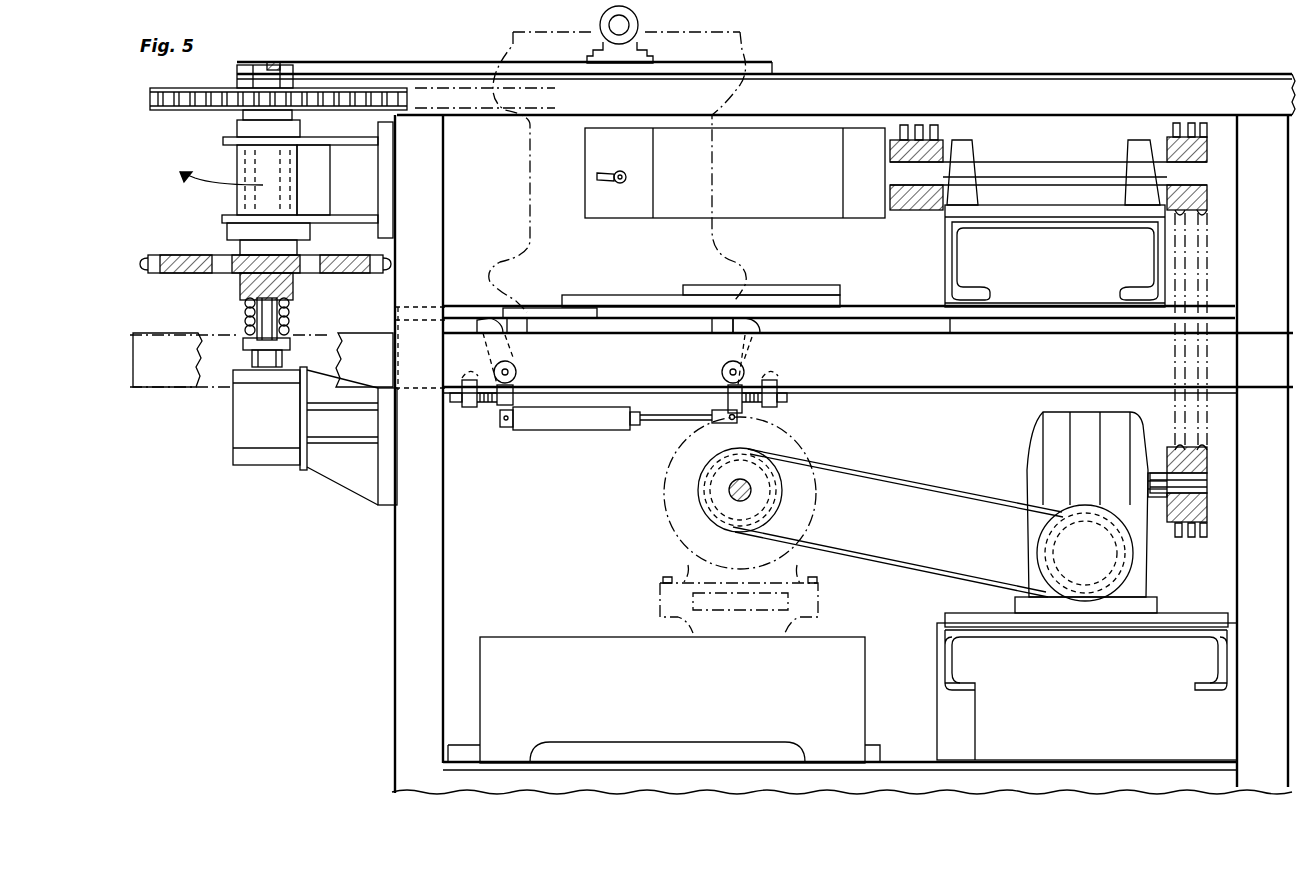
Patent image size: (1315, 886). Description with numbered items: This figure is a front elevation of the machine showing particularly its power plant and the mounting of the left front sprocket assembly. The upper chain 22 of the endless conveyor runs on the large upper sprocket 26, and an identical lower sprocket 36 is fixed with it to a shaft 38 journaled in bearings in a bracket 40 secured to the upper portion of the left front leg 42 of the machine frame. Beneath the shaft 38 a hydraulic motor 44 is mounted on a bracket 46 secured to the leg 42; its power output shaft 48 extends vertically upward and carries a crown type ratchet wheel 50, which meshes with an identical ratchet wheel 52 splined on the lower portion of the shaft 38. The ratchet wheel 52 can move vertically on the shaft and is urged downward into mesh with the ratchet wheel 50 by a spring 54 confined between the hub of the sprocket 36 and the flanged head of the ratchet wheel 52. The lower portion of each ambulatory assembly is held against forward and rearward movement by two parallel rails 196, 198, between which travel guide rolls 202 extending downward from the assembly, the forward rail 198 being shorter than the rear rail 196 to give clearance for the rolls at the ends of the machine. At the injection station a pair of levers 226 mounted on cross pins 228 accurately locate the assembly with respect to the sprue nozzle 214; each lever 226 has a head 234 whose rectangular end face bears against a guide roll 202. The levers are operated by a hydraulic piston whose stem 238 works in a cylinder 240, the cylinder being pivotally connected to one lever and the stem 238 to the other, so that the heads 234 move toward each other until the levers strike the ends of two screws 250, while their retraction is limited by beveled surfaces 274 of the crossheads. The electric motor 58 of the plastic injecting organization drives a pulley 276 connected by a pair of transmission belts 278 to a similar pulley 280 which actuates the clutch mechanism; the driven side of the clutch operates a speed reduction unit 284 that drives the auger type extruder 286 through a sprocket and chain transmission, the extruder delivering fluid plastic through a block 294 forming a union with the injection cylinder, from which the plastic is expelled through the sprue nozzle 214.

The upper chain 22 is at (152, 102).
The upper sprocket 26 is at (178, 88).
The lower sprocket 36 is at (207, 262).
The shaft 38 is at (280, 267).
The bracket 40 is at (240, 160).
The left front leg 42 is at (440, 170).
The hydraulic motor 44 is at (210, 423).
The bracket 46 is at (340, 473).
The power output shaft 48 is at (270, 365).
The crown type ratchet wheel 50 is at (281, 358).
The ratchet wheel 52 is at (289, 317).
The spring 54 is at (245, 305).
The electric motor 58 is at (662, 507).
The rear rail 196 is at (970, 327).
The forward rail 198 is at (875, 327).
The guide roll 202 is at (717, 333).
The sprue nozzle 214 is at (618, 171).
The lever 226 is at (490, 348).
The cross pin 228 is at (514, 373).
The head 234 is at (500, 320).
The piston stem 238 is at (675, 422).
The cylinder 240 is at (545, 430).
The screw 250 is at (487, 405).
The beveled surface 274 is at (462, 367).
The pulley 276 is at (723, 507).
The transmission belts 278 is at (865, 470).
The pulley 280 is at (1043, 567).
The speed reduction unit 284 is at (1028, 440).
The extruder 286 is at (845, 226).
The block 294 is at (607, 220).